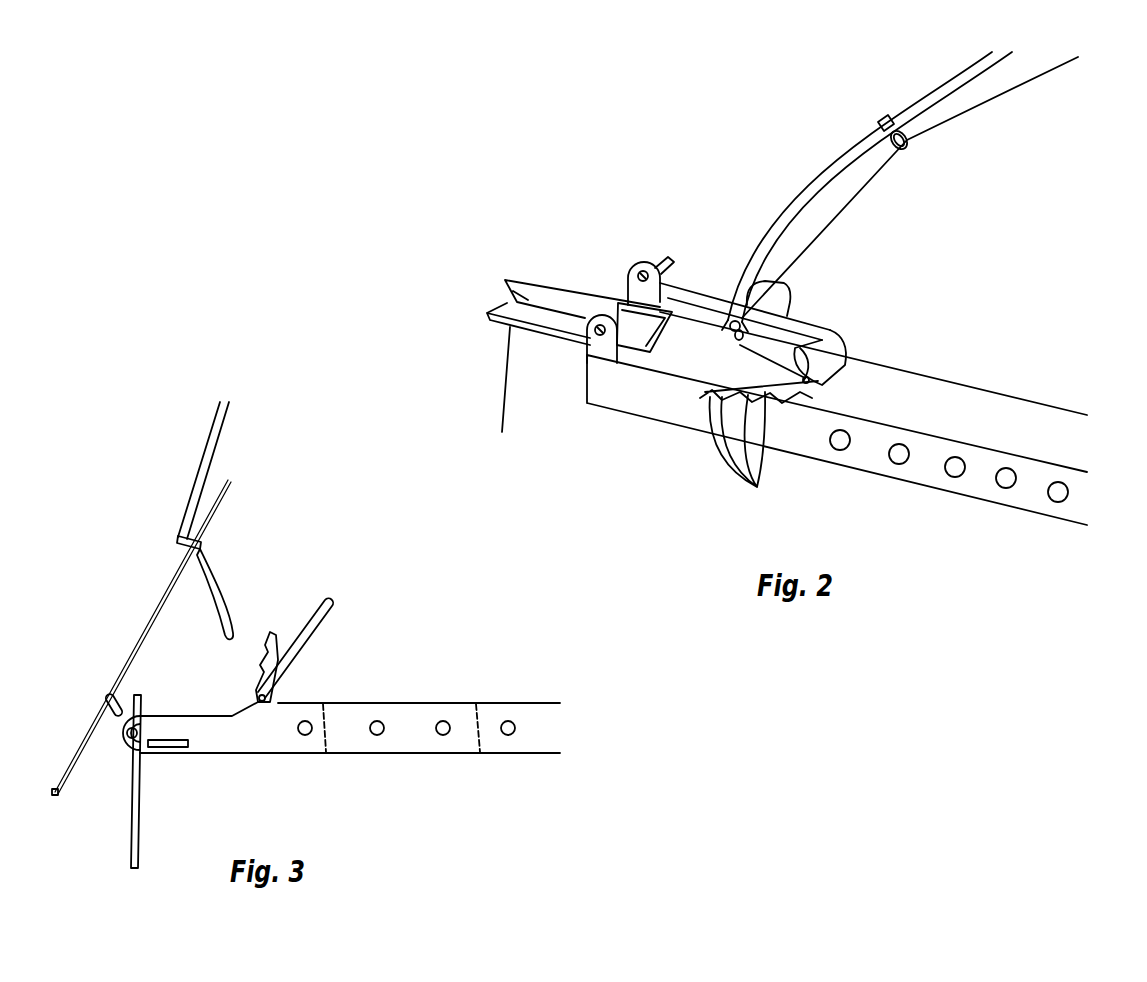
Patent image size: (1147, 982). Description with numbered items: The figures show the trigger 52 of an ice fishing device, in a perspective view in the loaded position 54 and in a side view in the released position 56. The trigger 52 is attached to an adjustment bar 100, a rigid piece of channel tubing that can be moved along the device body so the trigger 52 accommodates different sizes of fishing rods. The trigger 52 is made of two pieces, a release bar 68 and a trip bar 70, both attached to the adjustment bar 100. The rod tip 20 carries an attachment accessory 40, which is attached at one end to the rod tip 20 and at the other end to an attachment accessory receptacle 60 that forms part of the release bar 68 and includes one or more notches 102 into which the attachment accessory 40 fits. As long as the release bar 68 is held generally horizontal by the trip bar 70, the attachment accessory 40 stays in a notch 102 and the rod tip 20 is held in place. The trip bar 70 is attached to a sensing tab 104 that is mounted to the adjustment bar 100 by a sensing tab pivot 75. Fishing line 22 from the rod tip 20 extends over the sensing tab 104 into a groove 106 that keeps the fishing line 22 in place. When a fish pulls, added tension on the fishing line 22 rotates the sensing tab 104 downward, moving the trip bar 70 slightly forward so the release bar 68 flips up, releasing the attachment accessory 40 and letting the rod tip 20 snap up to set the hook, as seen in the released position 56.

In FIG. 2, the rod tip 20 is at (808, 187).
In FIG. 2, the fishing line 22 is at (577, 303).
In FIG. 2, the attachment accessory 40 is at (728, 342).
In FIG. 2, the trigger 52 is at (848, 272).
In FIG. 2, the loaded position 54 is at (543, 197).
In FIG. 3, the released position 56 is at (128, 602).
In FIG. 2, the attachment accessory receptacle 60 is at (700, 398).
In FIG. 3, the attachment accessory receptacle 60 is at (257, 661).
In FIG. 2, the release bar 68 is at (816, 329).
In FIG. 3, the release bar 68 is at (316, 629).
In FIG. 2, the trip bar 70 is at (667, 253).
In FIG. 3, the trip bar 70 is at (115, 697).
In FIG. 3, the sensing tab pivot 75 is at (141, 745).
In FIG. 2, the adjustment bar 100 is at (917, 387).
In FIG. 3, the adjustment bar 100 is at (341, 727).
In FIG. 2, the notches 102 is at (756, 485).
In FIG. 2, the sensing tab 104 is at (530, 293).
In FIG. 2, the groove 106 is at (487, 313).
In FIG. 3, the groove 106 is at (128, 843).